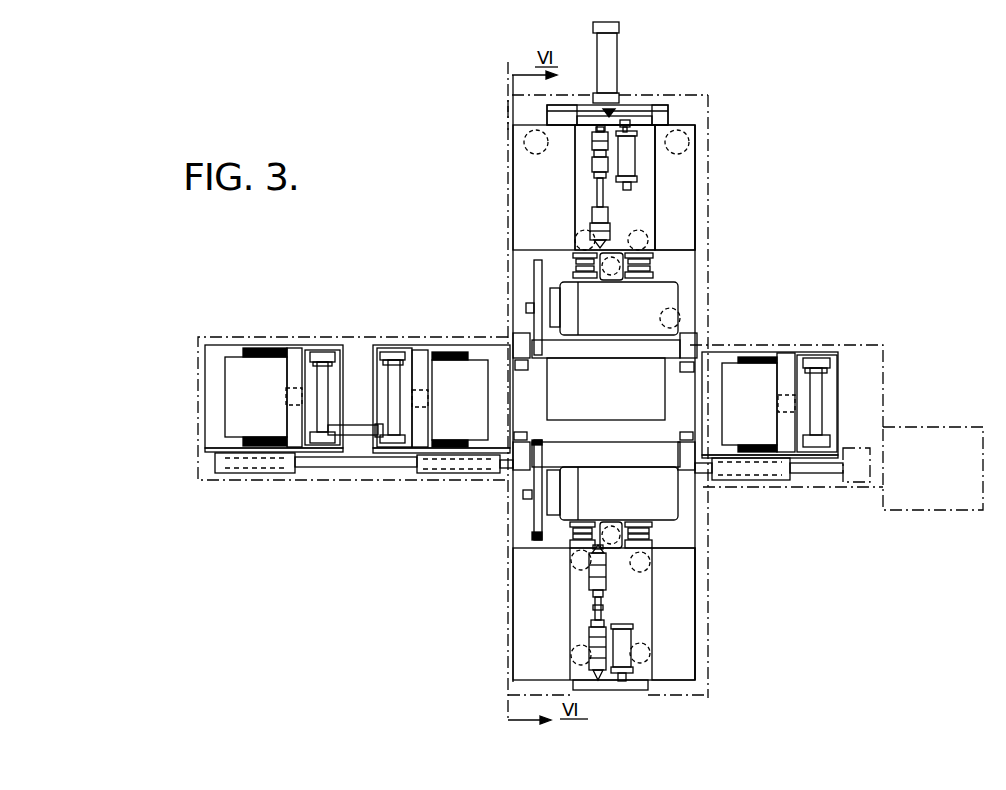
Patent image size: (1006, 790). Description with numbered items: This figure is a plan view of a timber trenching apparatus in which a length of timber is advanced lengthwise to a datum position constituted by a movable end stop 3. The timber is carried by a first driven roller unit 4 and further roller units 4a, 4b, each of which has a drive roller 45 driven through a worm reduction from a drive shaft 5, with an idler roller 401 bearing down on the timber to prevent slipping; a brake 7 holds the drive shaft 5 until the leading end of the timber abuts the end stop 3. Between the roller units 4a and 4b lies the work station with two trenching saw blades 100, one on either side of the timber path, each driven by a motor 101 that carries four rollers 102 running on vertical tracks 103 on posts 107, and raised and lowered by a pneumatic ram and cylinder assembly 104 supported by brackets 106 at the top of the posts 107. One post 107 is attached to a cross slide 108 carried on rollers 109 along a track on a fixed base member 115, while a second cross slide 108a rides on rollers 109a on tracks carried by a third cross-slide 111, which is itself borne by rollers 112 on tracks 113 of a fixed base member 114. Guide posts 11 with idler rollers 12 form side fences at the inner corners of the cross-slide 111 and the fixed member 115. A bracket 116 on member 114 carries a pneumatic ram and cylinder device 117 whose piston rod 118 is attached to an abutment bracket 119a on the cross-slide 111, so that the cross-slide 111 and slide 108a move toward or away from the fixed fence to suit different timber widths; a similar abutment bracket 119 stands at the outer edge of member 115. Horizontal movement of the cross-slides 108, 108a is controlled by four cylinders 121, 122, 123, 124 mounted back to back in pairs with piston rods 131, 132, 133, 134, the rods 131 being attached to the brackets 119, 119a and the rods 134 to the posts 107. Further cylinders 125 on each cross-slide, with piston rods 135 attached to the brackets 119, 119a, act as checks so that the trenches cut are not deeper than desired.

The movable end stop 3 is at (353, 425).
The first driven roller unit 4 is at (211, 375).
The further roller unit 4a is at (418, 345).
The further drive roller unit 4b is at (806, 349).
The drive shaft 5 is at (343, 463).
The brake 7 is at (856, 465).
The guide posts 11 is at (524, 340).
The idler rollers 12 is at (516, 358).
The drive roller 45 is at (225, 389).
The idler roller 401 is at (183, 397).
The trenching saw blades 100 is at (538, 458).
The motors 101 is at (613, 401).
The rollers 102 is at (650, 265).
The vertical tracks 103 is at (652, 255).
The pneumatic ram and cylinder assembly 104 is at (626, 282).
The brackets 106 is at (634, 549).
The vertical posts 107 is at (700, 200).
The cross slide 108 is at (685, 633).
The second cross slide 108a is at (688, 188).
The rollers 109 is at (652, 650).
The rollers 109a is at (574, 240).
The third cross-slide 111 is at (517, 143).
The rollers 112 is at (508, 114).
The tracks 113 is at (548, 121).
The fixed base member 114 is at (667, 112).
The fixed base member 115 is at (522, 502).
The vertically extending bracket 116 is at (648, 104).
The pneumatic ram and cylinder device 117 is at (613, 43).
The piston rod 118 is at (611, 108).
The abutment bracket 119 is at (615, 688).
The abutment bracket 119a is at (634, 140).
The cylinder 121 is at (593, 140).
The cylinder 122 is at (593, 176).
The cylinder 123 is at (593, 212).
The cylinder 124 is at (593, 230).
The pneumatic cylinders 125 is at (633, 186).
The piston rod 131 is at (592, 672).
The piston rod 132 is at (594, 617).
The piston rod 133 is at (592, 600).
The piston rod 134 is at (571, 547).
The piston rods 135 is at (636, 162).